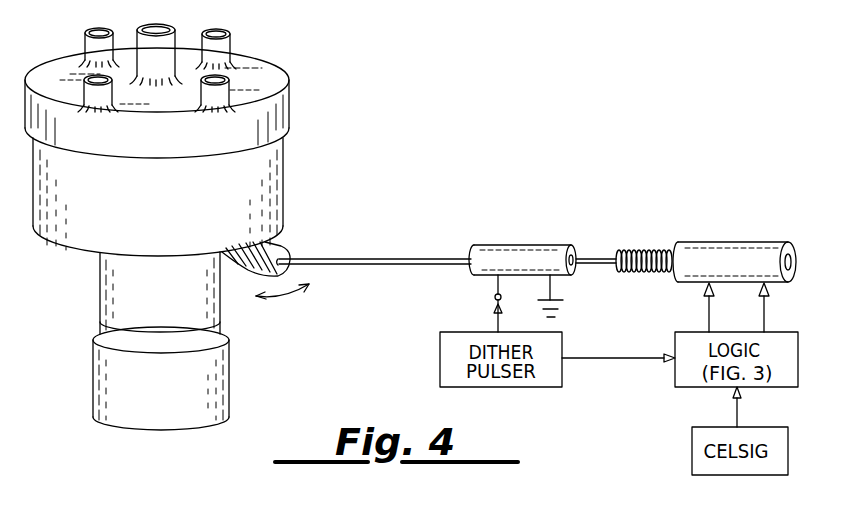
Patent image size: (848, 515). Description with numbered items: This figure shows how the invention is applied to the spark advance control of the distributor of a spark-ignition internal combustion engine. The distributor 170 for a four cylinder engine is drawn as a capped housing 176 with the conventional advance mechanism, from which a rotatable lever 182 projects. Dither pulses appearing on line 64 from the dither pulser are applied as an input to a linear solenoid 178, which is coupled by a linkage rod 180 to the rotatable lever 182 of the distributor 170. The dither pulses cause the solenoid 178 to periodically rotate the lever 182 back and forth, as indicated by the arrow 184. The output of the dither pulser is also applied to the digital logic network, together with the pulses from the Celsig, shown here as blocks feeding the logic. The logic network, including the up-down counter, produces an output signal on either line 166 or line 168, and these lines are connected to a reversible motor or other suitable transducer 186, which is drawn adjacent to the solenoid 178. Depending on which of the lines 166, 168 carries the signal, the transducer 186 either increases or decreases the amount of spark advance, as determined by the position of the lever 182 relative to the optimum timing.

The distributor 170 is at (292, 45).
The housing body 176 is at (80, 231).
The rotatable lever 182 is at (284, 248).
The linkage rod 180 is at (383, 257).
The linear solenoid 178 is at (518, 245).
The line 64 is at (494, 306).
The reversible motor or other suitable transducer 186 is at (735, 242).
The line 166 is at (707, 308).
The line 168 is at (765, 308).
The arrow 184 is at (283, 296).